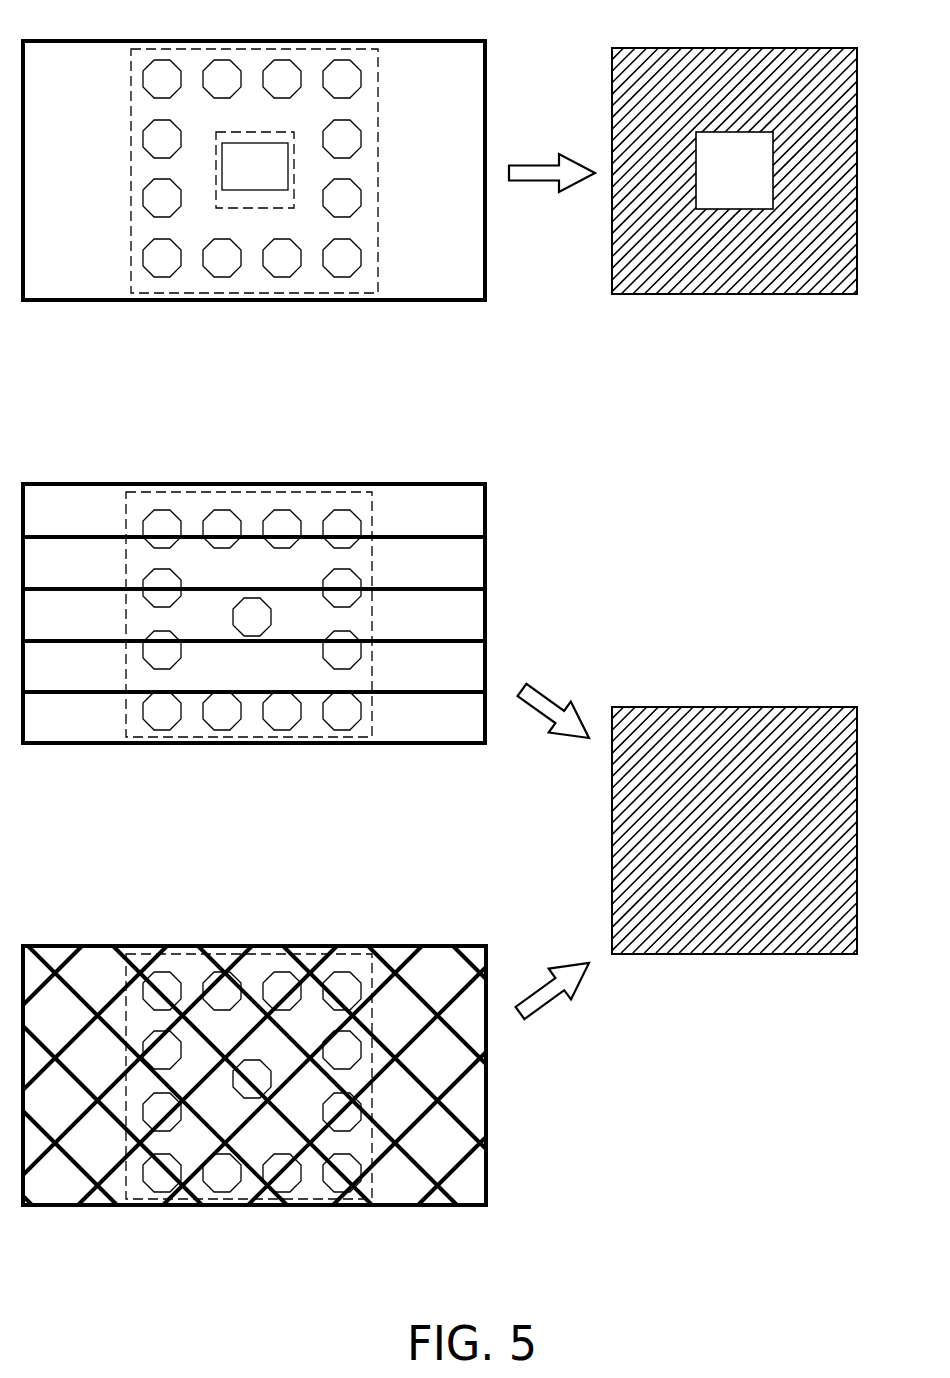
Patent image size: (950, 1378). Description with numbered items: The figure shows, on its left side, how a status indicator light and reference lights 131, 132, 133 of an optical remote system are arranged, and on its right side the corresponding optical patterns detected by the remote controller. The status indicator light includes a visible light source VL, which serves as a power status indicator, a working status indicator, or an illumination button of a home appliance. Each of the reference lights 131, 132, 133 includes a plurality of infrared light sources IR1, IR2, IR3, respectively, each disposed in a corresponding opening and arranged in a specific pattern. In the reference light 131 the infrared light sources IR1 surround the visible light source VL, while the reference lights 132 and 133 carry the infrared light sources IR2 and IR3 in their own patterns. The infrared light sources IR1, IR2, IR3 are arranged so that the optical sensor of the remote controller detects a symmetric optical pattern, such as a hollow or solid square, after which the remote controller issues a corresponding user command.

The reference light 131 is at (377, 51).
The reference light 132 is at (372, 493).
The reference light 133 is at (372, 955).
The infrared light source IR1 is at (144, 137).
The infrared light source IR2 is at (142, 590).
The infrared light source IR3 is at (143, 1048).
The visible light source VL is at (272, 180).